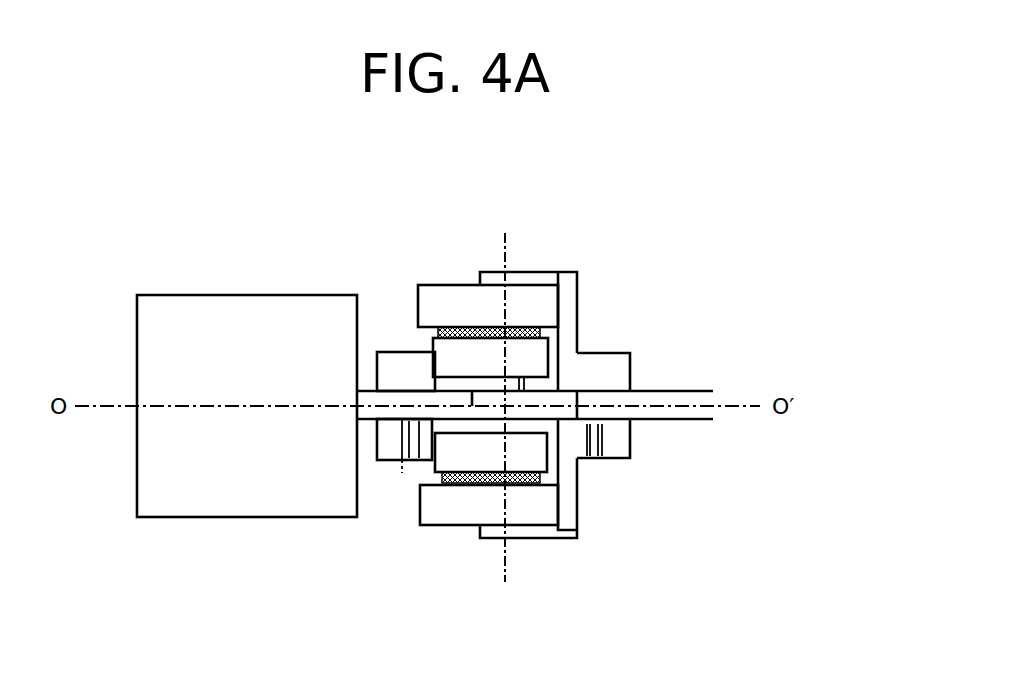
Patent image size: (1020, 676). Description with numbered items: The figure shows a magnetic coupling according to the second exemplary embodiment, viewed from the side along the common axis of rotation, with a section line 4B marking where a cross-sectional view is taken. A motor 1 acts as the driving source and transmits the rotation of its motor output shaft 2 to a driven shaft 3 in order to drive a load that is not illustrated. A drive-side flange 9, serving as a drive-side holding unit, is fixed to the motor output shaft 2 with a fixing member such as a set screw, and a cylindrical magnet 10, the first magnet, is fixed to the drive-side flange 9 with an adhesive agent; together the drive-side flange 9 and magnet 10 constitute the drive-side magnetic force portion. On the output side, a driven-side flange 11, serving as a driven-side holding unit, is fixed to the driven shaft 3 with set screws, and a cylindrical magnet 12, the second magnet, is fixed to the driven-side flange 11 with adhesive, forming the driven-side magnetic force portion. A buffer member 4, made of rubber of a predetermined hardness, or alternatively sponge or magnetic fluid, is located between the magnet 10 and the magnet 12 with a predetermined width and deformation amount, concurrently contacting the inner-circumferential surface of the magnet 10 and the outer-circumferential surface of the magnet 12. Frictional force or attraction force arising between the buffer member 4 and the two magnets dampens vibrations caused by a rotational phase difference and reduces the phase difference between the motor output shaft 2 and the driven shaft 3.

The motor 1 is at (228, 495).
The motor output shaft 2 is at (402, 398).
The driven shaft 3 is at (697, 393).
The buffer member 4 is at (535, 327).
The drive-side flange 9 is at (392, 455).
The magnet 10 is at (537, 457).
The driven-side flange 11 is at (597, 358).
The magnet 12 is at (580, 540).
The section line 4B- 4B is at (537, 221).